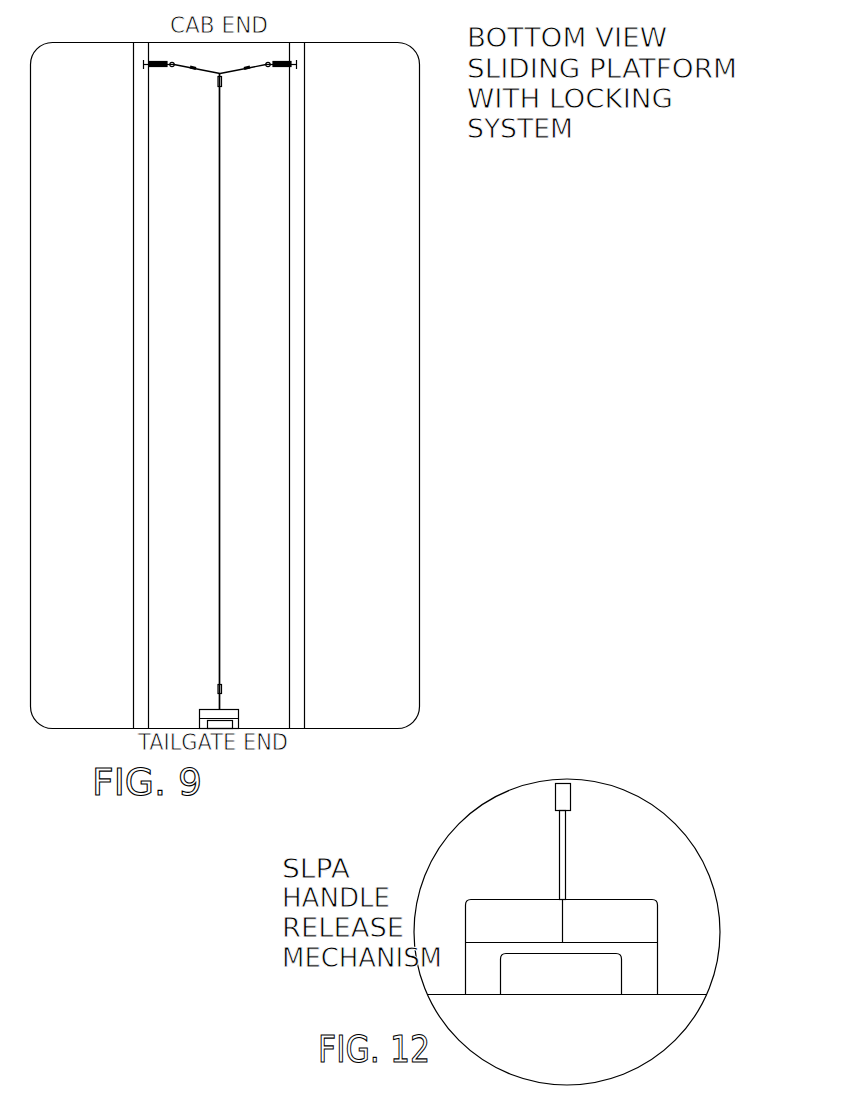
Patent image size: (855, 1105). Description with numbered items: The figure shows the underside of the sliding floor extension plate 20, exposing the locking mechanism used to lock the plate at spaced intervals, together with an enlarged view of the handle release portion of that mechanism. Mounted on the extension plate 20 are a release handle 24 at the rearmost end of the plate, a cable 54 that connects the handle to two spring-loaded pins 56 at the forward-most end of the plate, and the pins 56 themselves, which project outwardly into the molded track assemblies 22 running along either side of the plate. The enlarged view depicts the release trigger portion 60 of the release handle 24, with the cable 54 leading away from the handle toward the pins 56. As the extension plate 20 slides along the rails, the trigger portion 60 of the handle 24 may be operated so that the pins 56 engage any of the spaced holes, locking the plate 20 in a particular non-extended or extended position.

In FIG. 9, the sliding floor extension plate 20 is at (365, 605).
In FIG. 9, the molded track assemblies 22 is at (219, 385).
In FIG. 9, the release handle 24 is at (215, 710).
In FIG. 12, the release handle 24 is at (593, 917).
In FIG. 9, the cable 54 is at (218, 278).
In FIG. 12, the cable 54 is at (558, 850).
In FIG. 9, the spring-loaded pins 56 is at (160, 67).
In FIG. 12, the release trigger portion 60 is at (560, 971).